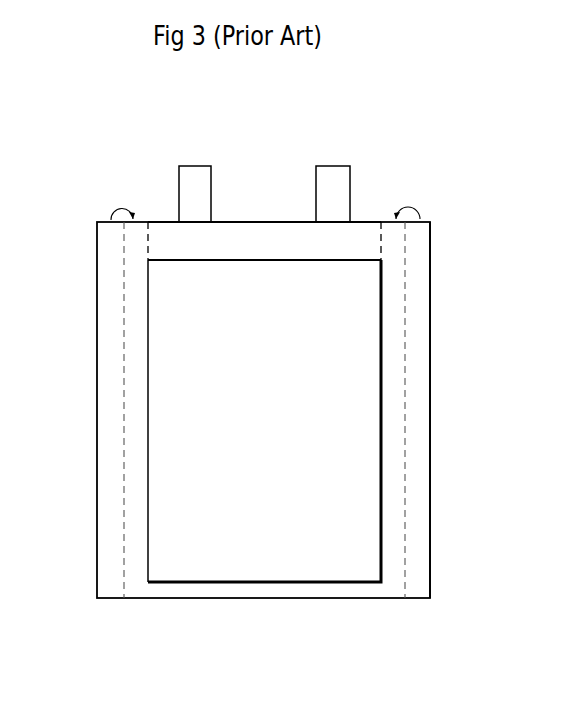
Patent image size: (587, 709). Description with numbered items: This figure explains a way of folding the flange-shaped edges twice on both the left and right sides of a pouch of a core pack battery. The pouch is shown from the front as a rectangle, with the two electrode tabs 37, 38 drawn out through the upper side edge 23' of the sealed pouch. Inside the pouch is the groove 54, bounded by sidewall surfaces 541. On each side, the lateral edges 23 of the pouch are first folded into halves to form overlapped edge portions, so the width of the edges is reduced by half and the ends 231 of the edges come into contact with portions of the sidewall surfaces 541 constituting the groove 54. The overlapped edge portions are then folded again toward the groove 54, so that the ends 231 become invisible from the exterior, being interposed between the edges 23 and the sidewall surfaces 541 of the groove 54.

The lateral edges 23 is at (298, 402).
The upper side edge 23' is at (264, 194).
The ends of the edges 231 is at (432, 277).
The groove 54 is at (170, 337).
The sidewall surfaces 541 is at (383, 407).
The electrode tab 37 is at (331, 165).
The electrode tab 38 is at (193, 165).